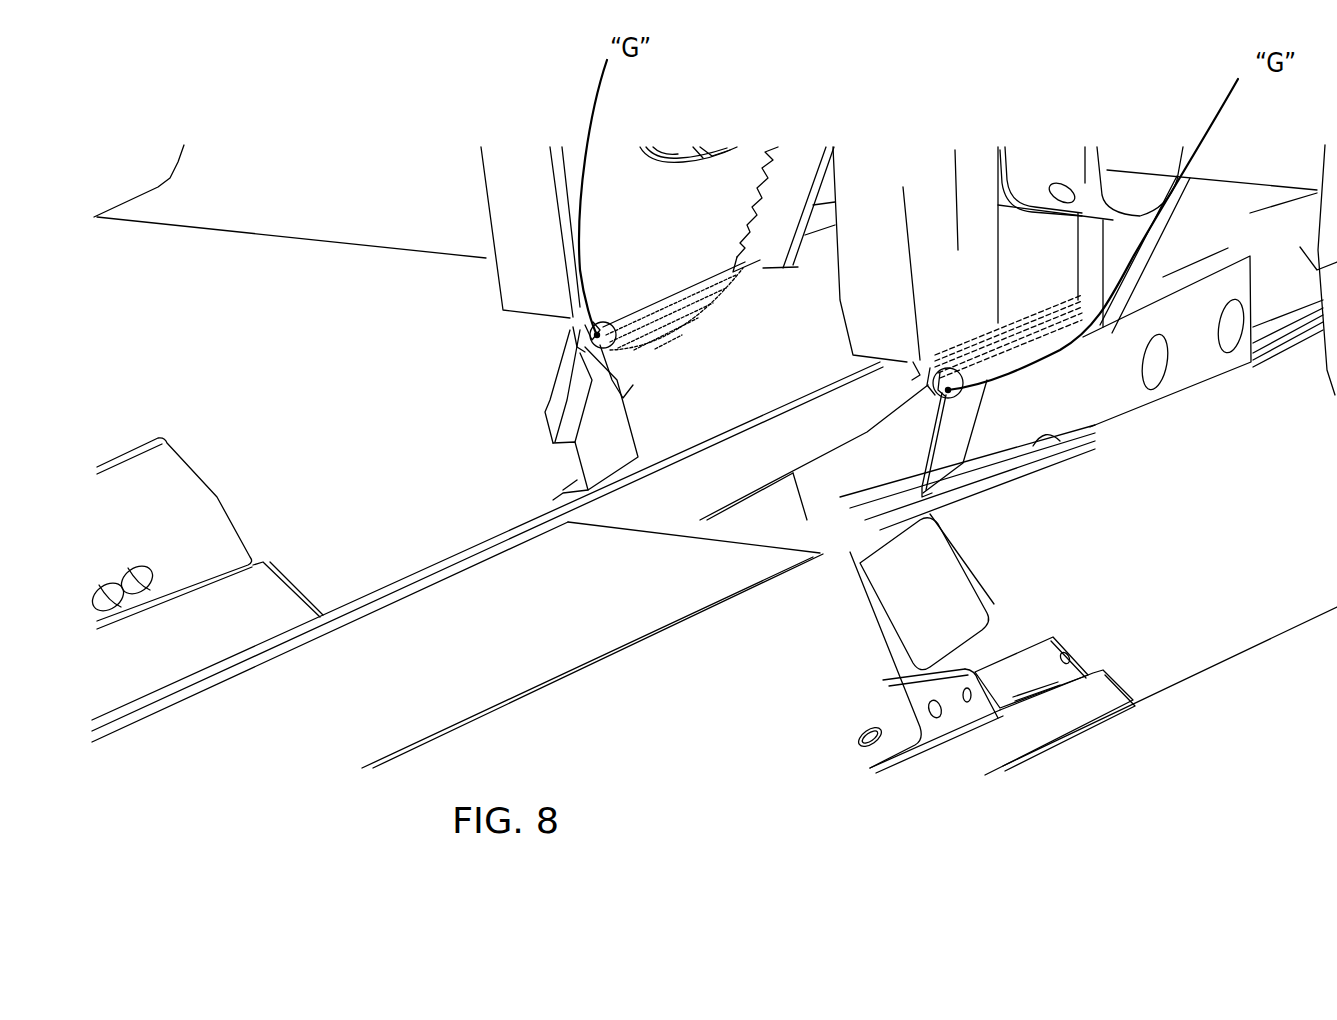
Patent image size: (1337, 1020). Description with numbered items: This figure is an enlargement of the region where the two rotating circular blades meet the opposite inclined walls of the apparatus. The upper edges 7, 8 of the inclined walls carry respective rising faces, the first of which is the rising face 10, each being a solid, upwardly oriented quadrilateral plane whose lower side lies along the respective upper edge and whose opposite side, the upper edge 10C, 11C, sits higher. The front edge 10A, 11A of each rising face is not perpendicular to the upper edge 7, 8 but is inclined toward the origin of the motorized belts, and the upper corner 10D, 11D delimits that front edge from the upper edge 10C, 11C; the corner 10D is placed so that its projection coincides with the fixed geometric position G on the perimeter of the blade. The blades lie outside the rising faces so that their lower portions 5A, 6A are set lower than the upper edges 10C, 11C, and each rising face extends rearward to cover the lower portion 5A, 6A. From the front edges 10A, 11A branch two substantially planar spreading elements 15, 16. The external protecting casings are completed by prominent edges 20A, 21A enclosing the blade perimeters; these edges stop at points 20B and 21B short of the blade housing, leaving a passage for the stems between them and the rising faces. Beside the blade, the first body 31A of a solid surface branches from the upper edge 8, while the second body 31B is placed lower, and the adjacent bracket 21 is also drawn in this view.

The lower portion of rotating blade 5A is at (672, 320).
The lower portion of rotating blade 6A is at (1024, 335).
The upper edge 7 is at (369, 599).
The upper edge 8 is at (727, 518).
The rising face 10 is at (734, 349).
The front edge 10A is at (633, 382).
The upper edge of rising face 10C is at (724, 274).
The upper corner 10D is at (597, 335).
The front edge 11A is at (948, 392).
The upper edge of rising face 11C is at (1065, 327).
The upper corner 11D is at (912, 364).
The spreading element 15 is at (612, 441).
The spreading element 16 is at (874, 477).
The prominent edge 20A is at (538, 167).
The end point of prominent edge 20B is at (546, 314).
The bracket 21 is at (944, 202).
The prominent edge 21A is at (868, 223).
The end point of prominent edge 21B is at (867, 431).
The first body of solid surface 31A is at (777, 520).
The second body of solid surface 31B is at (899, 646).